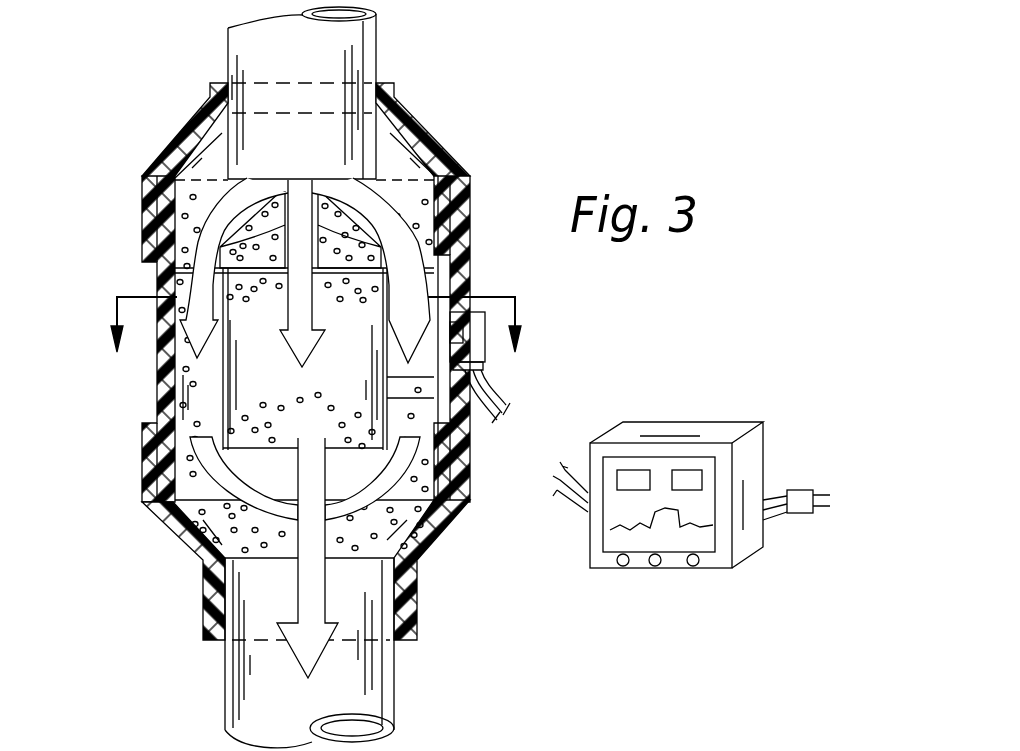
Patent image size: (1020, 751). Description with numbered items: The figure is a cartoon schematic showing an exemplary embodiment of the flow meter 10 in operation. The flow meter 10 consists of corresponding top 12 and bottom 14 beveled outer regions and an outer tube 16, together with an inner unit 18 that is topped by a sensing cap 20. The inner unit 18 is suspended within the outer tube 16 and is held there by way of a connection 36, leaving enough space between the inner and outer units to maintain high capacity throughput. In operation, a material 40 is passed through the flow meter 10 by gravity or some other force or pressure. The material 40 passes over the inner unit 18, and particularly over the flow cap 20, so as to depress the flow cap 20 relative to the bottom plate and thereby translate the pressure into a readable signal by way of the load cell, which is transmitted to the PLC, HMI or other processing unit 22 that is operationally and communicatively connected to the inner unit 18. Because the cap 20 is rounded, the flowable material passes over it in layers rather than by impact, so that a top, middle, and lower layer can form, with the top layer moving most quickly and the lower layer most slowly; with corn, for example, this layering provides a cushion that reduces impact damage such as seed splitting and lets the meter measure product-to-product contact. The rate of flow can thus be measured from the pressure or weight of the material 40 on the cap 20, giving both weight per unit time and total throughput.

The flow meter 10 is at (507, 70).
The top beveled outer region 12 is at (177, 130).
The bottom beveled outer region 14 is at (180, 543).
The outer tube 16 is at (153, 390).
The inner unit 18 is at (378, 447).
The sensing cap 20 is at (384, 242).
The processing unit 22 is at (710, 427).
The connection 36 is at (490, 360).
The material 40 is at (193, 230).